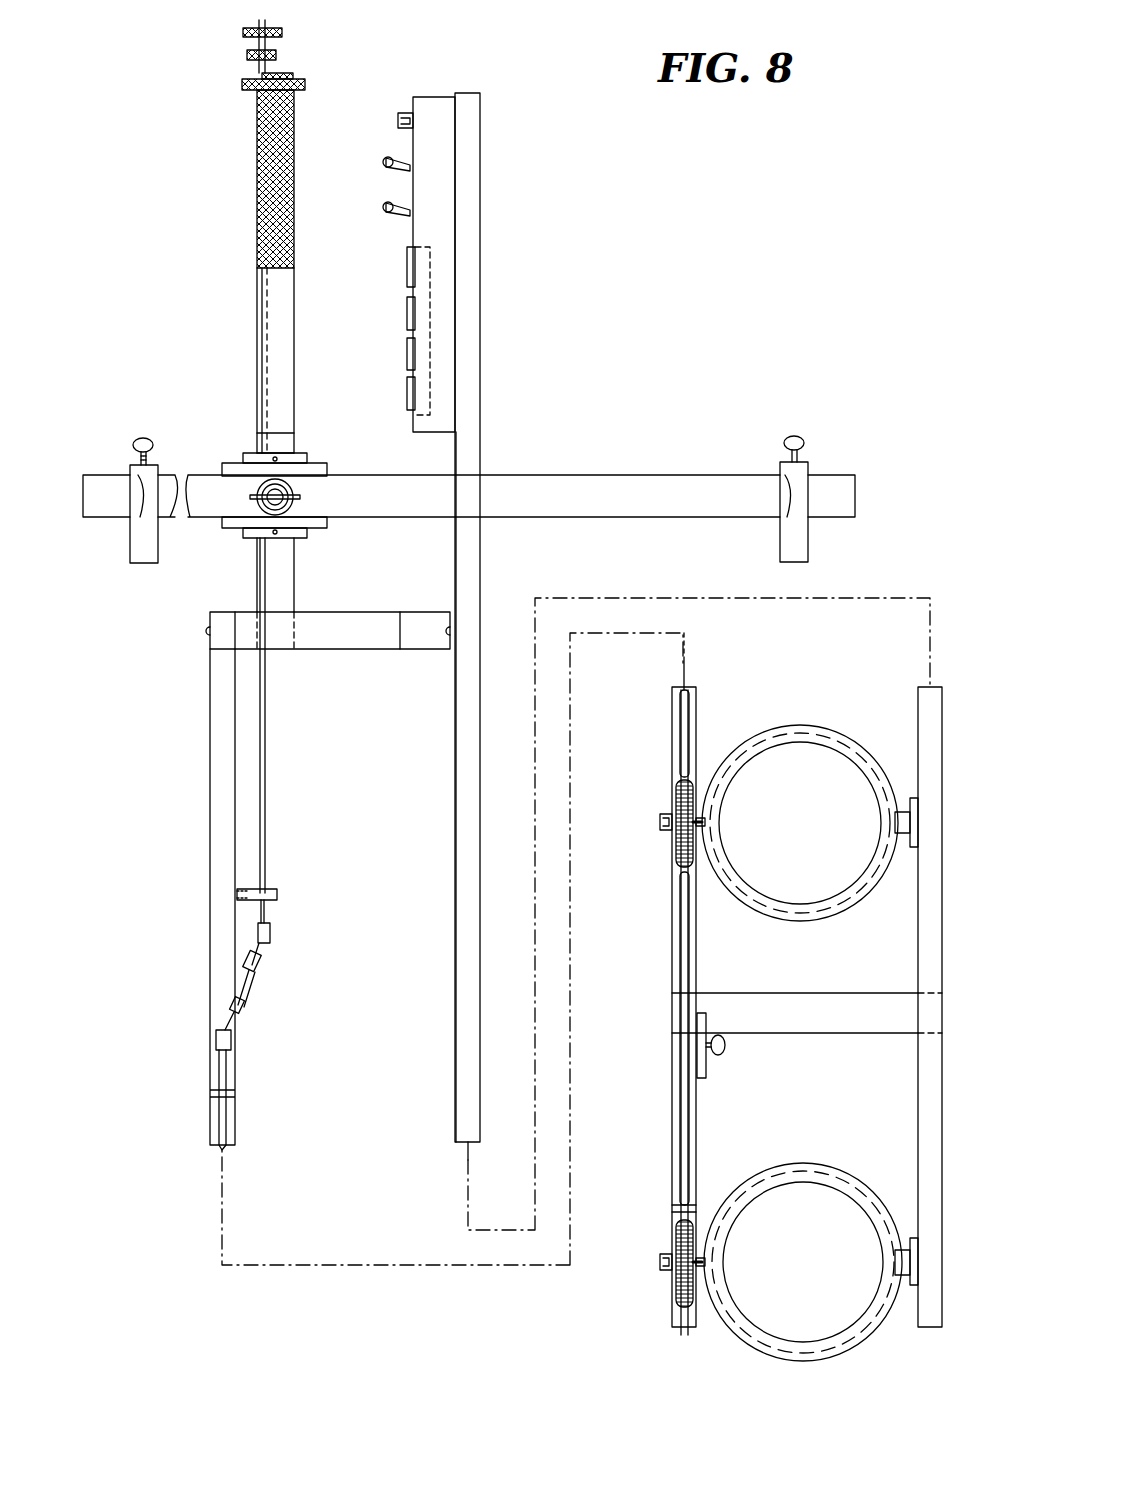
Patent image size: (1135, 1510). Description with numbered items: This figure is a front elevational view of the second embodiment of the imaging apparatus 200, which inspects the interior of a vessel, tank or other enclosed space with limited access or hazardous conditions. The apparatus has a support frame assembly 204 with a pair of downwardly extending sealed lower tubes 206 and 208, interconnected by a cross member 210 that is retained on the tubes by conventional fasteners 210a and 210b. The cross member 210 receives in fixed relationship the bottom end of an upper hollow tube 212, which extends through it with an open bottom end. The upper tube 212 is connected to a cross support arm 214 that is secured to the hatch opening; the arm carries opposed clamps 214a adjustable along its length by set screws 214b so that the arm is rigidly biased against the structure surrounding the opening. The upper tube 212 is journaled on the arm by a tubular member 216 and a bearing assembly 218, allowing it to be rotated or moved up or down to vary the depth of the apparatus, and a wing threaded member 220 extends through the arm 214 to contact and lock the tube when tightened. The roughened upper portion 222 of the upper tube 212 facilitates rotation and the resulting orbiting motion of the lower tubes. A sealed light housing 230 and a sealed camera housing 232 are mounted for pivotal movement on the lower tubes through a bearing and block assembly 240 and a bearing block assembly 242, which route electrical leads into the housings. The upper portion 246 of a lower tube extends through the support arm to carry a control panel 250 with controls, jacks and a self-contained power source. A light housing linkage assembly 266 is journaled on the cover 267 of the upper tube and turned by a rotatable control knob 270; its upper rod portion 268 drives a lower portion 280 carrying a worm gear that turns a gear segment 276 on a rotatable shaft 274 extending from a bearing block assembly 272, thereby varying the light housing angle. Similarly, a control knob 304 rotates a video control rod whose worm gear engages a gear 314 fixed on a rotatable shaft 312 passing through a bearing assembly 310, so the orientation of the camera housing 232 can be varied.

The imaging apparatus 200 is at (513, 430).
The support frame assembly 204 is at (480, 590).
The lower tube 206 is at (456, 788).
The lower tube 208 is at (210, 838).
The cross member 210 is at (340, 620).
The fastener 210a is at (208, 631).
The fastener 210b is at (445, 633).
The upper hollow tube 212 is at (297, 418).
The cross support arm 214 is at (575, 472).
The clamp 214a is at (158, 470).
The set screw 214b is at (141, 438).
The tubular member 216 is at (327, 468).
The bearing assembly 218 is at (300, 538).
The wing threaded member 220 is at (257, 495).
The upper portion of the upper tube 222 is at (257, 133).
The light housing 230 is at (775, 725).
The camera housing 232 is at (777, 1165).
The bearing and block assembly 240 is at (905, 800).
The bearing block assembly 242 is at (905, 1240).
The upper portion of the lower tube 246 is at (473, 340).
The control panel 250 is at (430, 100).
The light housing linkage assembly 266 is at (268, 760).
The cover 267 is at (300, 73).
The upper rod portion 268 is at (255, 293).
The rotatable control knob 270 is at (247, 55).
The bearing block assembly 272 is at (700, 822).
The rotatable shaft 274 is at (660, 822).
The gear segment 276 is at (676, 845).
The lower portion of the rod assembly 280 is at (681, 940).
The control knob 304 is at (283, 32).
The bearing assembly 310 is at (700, 1262).
The rotatable shaft 312 is at (660, 1262).
The gear 314 is at (676, 1285).